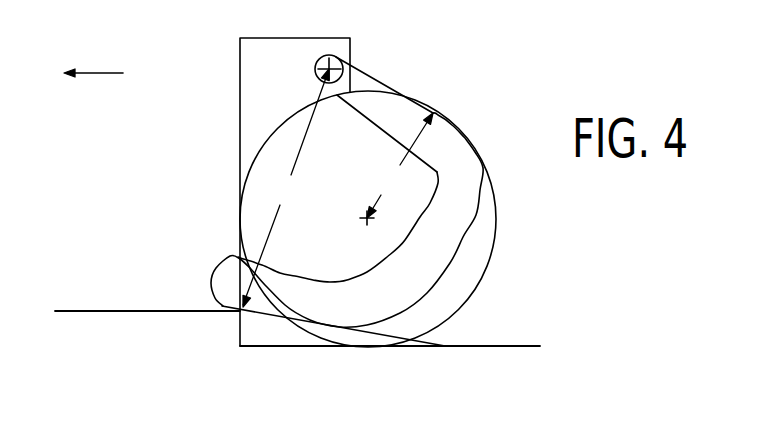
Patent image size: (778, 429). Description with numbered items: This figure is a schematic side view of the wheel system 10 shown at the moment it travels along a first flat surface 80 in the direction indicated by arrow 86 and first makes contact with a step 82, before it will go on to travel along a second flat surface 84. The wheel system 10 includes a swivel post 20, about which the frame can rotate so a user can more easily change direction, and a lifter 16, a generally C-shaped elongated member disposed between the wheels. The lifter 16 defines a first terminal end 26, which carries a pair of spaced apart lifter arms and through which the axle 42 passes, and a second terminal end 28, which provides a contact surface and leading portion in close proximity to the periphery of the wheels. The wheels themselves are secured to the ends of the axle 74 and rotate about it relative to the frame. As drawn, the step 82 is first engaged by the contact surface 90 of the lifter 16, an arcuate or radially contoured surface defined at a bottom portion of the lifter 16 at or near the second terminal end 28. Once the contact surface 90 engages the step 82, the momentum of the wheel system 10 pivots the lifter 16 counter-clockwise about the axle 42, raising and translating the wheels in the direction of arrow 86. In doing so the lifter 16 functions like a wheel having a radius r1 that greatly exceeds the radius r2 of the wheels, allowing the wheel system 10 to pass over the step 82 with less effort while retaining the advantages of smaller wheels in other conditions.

The wheel system 10 is at (473, 123).
The lifter 16 is at (465, 182).
The swivel post 20 is at (433, 260).
The first terminal end 26 is at (310, 63).
The second terminal end 28 is at (210, 283).
The axle 42 is at (343, 54).
The axle 74 is at (363, 221).
The first flat surface 80 is at (508, 345).
The step 82 is at (243, 328).
The second flat surface 84 is at (93, 311).
The arrow 86 is at (98, 72).
The contact surface 90 is at (213, 306).
The radius r1 is at (286, 188).
The radius r2 is at (400, 165).